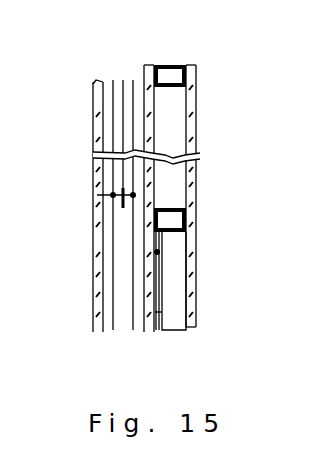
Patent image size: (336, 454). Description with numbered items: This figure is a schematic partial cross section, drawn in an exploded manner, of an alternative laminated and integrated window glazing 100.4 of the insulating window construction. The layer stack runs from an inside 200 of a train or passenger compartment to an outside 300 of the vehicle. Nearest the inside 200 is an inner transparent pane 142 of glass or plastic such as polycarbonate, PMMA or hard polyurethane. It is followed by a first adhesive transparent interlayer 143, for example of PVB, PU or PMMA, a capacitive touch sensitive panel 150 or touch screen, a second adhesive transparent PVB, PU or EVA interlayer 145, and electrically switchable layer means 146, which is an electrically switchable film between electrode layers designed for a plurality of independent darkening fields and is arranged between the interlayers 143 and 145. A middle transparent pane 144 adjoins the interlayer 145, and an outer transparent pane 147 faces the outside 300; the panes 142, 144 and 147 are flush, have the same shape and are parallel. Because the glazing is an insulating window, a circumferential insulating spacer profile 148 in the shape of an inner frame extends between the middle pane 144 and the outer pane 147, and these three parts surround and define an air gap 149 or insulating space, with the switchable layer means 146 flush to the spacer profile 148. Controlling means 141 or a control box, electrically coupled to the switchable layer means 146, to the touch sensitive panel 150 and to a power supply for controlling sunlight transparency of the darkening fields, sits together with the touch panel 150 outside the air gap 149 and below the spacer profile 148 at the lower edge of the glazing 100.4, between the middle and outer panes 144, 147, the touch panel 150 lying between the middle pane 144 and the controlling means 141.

The laminated and integrated window glazing 100.4 is at (64, 84).
The inside 200 is at (80, 127).
The outside 300 is at (250, 89).
The controlling means 141 is at (229, 319).
The inner transparent pane 142 is at (70, 246).
The first transparent interlayer 143 is at (68, 216).
The middle transparent pane 144 is at (124, 231).
The second adhesive transparent interlayer 145 is at (78, 205).
The electrically switchable layer means 146 is at (65, 144).
The outer transparent pane 147 is at (228, 188).
The insulating spacer profile 148 is at (210, 119).
The air gap 149 is at (211, 127).
The capacitive touch sensitive panel 150 is at (204, 281).